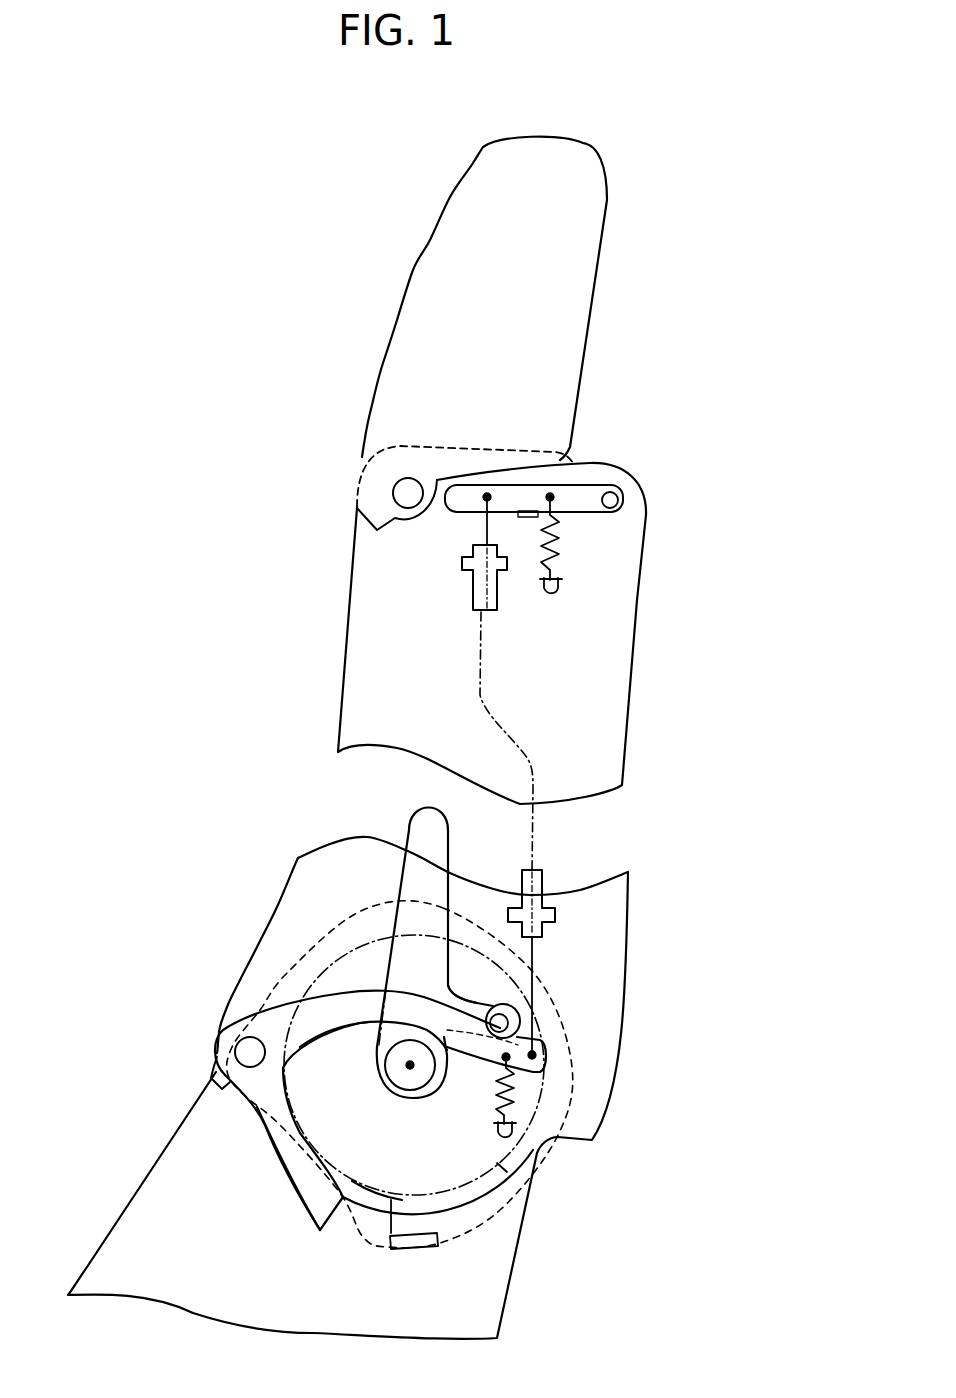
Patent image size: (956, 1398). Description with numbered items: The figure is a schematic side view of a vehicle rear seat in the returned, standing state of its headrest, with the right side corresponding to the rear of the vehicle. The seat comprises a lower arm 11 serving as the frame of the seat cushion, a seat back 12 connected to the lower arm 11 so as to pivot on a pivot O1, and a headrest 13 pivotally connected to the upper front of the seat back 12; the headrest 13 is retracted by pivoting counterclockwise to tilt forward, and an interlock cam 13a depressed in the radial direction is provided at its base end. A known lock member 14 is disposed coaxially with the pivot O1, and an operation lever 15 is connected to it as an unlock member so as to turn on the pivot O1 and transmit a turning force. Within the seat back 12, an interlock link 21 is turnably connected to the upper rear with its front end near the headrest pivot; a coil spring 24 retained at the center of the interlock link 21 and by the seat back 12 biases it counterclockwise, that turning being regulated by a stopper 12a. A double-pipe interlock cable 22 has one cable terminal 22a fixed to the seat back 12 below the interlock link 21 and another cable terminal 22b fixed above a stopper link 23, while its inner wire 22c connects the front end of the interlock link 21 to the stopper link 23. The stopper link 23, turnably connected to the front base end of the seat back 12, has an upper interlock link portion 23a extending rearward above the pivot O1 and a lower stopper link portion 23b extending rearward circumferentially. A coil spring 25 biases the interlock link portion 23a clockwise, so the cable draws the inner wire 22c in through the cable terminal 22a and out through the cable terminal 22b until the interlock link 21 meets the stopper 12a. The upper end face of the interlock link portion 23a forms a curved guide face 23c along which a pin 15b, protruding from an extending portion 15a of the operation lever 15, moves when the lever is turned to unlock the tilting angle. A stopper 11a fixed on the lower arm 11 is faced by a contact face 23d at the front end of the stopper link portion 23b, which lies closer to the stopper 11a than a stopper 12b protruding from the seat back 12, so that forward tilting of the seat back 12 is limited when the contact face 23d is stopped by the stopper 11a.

The lower arm 11 is at (507, 1307).
The stopper 11a is at (440, 1240).
The seat back 12 is at (645, 570).
The stopper 12a is at (527, 511).
The stopper 12b is at (210, 1074).
The headrest 13 is at (587, 358).
The interlock cam 13a is at (392, 530).
The lock member 14 is at (505, 1180).
The operation lever 15 is at (425, 796).
The extending portion 15a is at (470, 1003).
The pin 15b is at (527, 1000).
The interlock link 21 is at (600, 480).
The interlock cable 22 is at (490, 700).
The cable terminal 22a is at (490, 592).
The cable terminal 22b is at (540, 883).
The inner wire 22c is at (482, 516).
The stopper link 23 is at (252, 1128).
The interlock link portion 23a is at (340, 1022).
The stopper link portion 23b is at (283, 1195).
The guide face 23c is at (540, 1035).
The contact face 23d is at (330, 1228).
The coil spring 24 is at (556, 540).
The coil spring 25 is at (495, 1097).
The pivot O1 is at (409, 1068).